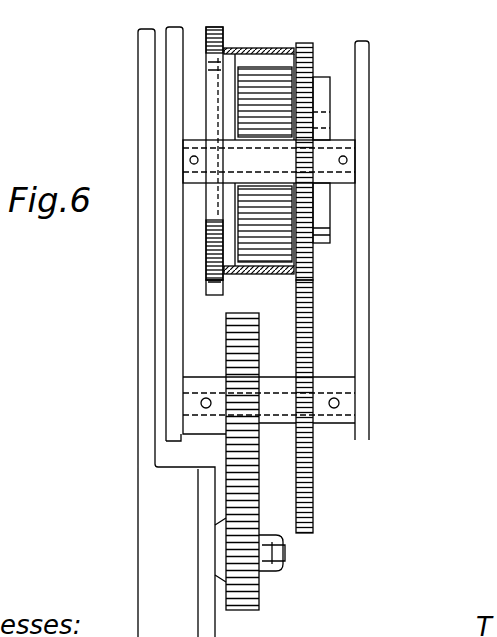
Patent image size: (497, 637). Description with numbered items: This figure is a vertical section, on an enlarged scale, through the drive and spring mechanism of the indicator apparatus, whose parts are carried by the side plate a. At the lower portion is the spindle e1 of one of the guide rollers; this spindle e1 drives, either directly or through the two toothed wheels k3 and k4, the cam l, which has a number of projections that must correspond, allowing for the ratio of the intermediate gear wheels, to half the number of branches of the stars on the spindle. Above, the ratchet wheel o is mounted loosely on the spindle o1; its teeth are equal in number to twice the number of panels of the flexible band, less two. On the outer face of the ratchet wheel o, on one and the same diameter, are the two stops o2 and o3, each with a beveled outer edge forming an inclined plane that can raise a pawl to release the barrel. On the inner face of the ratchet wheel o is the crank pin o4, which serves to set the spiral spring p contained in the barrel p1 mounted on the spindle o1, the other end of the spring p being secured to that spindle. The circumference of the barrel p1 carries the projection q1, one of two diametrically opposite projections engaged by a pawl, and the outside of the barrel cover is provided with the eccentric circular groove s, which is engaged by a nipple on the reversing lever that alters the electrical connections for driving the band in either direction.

The side plate a is at (140, 150).
The eccentric circular groove s is at (212, 73).
The spiral spring p is at (262, 72).
The barrel p1 is at (240, 48).
The ratchet wheel o is at (318, 54).
The spindle o1 is at (347, 150).
The stop o2 is at (322, 92).
The stop o3 is at (320, 212).
The crank pin o4 is at (325, 127).
The projection q1 is at (213, 290).
The toothed wheel k3 is at (262, 602).
The toothed wheel k4 is at (275, 430).
The cam l is at (305, 507).
The spindle e1 is at (286, 552).